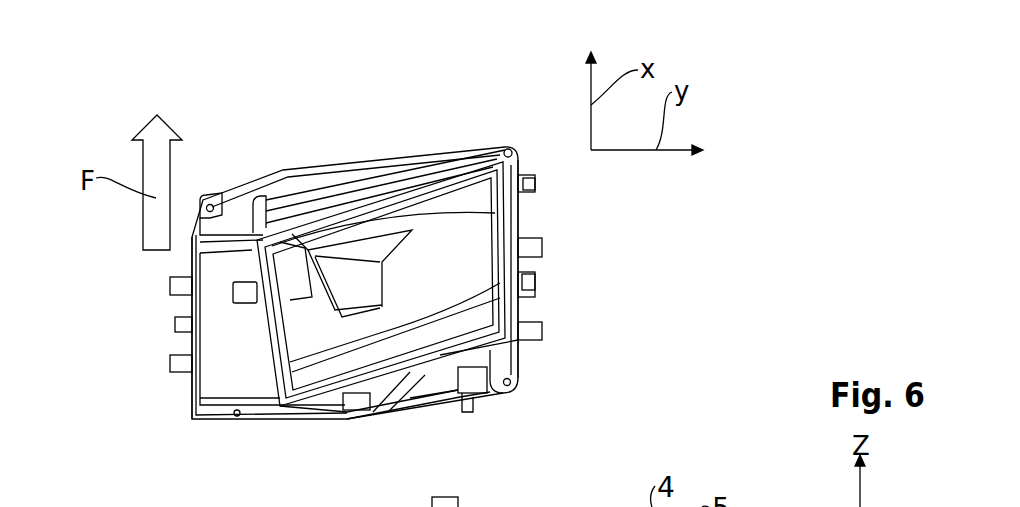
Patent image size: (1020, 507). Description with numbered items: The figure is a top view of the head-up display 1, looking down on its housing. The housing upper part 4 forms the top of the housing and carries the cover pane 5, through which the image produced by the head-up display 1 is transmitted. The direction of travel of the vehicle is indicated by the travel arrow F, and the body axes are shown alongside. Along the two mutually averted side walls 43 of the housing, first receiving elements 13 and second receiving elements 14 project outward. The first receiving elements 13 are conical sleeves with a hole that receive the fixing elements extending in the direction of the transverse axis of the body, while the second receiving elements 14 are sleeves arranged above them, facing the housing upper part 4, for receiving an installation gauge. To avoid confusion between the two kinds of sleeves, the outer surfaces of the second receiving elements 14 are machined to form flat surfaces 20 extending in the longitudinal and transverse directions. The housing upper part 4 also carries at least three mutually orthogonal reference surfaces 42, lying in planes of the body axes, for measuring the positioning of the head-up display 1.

The head-up display 1 is at (442, 116).
The housing upper part 4 is at (341, 186).
The cover pane 5 is at (440, 284).
The first receiving elements 13 is at (170, 285).
The second receiving elements 14 is at (175, 323).
The flat surfaces 20 is at (531, 176).
The reference surfaces 42 is at (246, 310).
The side walls 43 is at (195, 392).